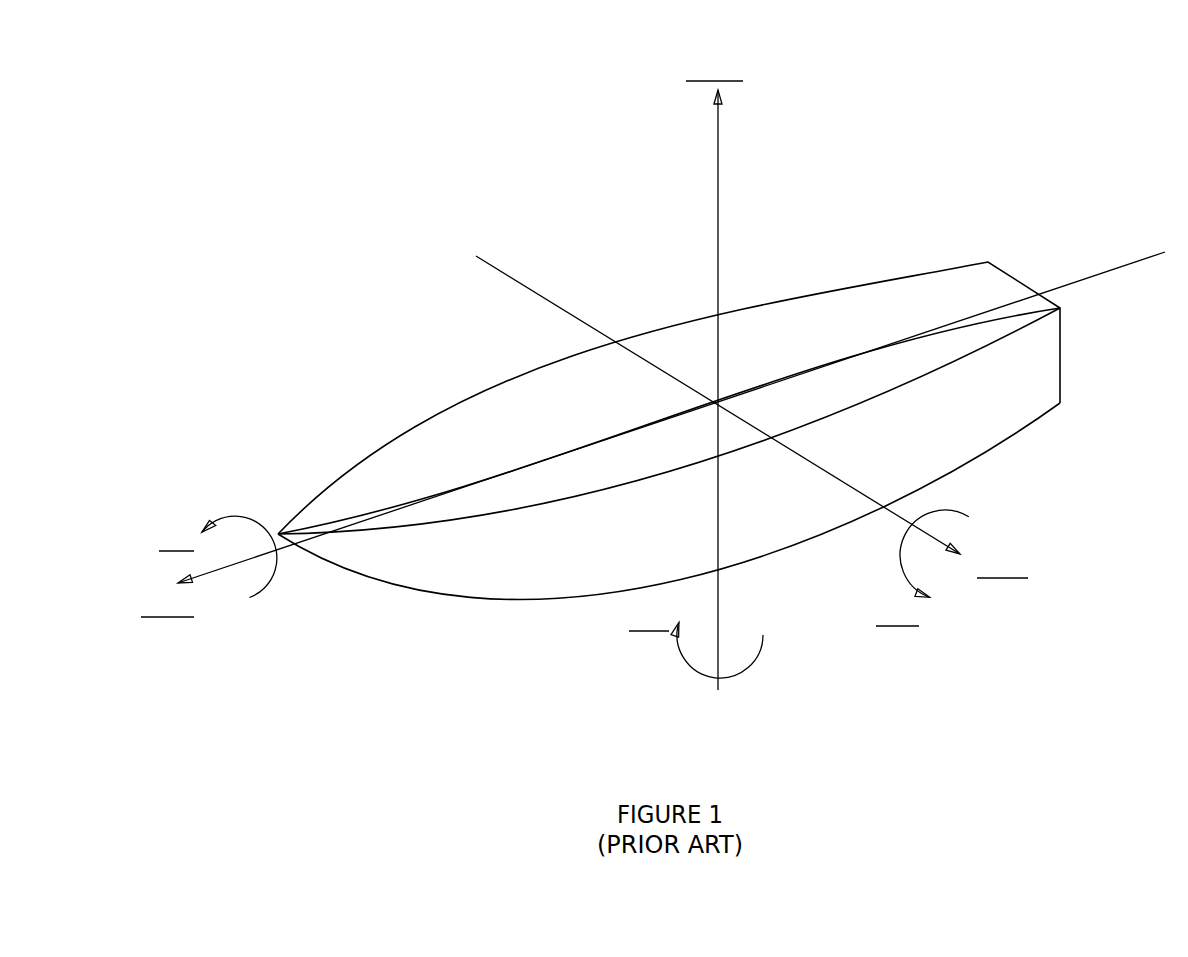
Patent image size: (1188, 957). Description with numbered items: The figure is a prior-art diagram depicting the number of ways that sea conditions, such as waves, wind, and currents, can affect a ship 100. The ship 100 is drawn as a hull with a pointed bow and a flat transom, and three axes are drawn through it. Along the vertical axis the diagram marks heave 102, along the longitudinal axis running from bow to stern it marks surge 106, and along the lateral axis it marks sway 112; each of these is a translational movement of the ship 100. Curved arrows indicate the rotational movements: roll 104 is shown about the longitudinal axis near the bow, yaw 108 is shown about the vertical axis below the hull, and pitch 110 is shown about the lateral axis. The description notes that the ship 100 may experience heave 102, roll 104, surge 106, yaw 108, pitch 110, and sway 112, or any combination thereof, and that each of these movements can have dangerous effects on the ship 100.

The ship 100 is at (463, 428).
The heave 102 is at (717, 155).
The roll 104 is at (224, 520).
The surge 106 is at (228, 570).
The yaw 108 is at (684, 657).
The pitch 110 is at (901, 563).
The sway 112 is at (960, 548).